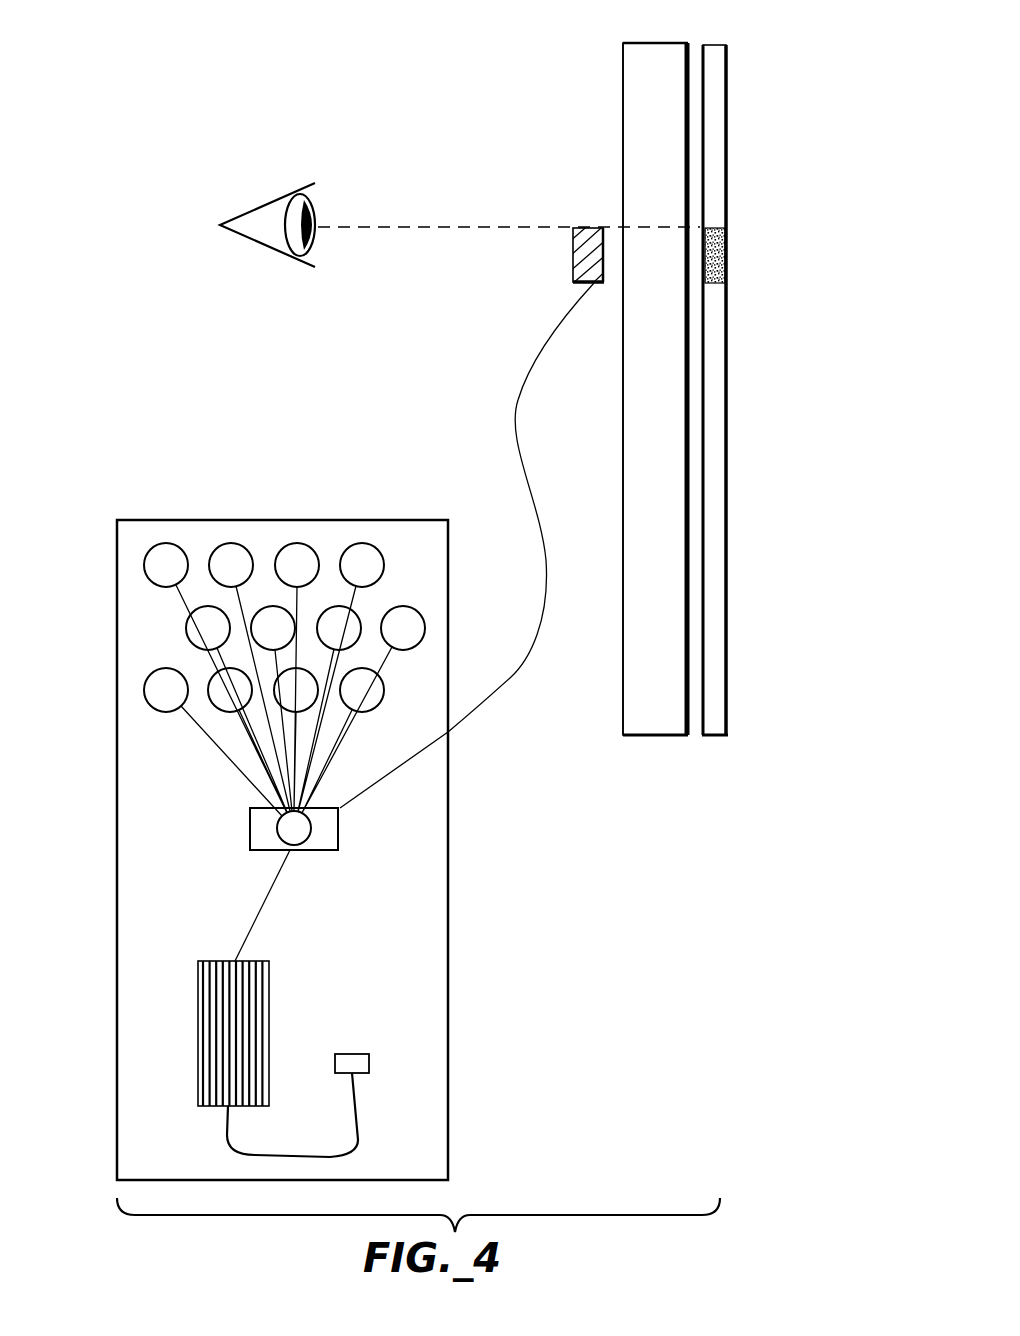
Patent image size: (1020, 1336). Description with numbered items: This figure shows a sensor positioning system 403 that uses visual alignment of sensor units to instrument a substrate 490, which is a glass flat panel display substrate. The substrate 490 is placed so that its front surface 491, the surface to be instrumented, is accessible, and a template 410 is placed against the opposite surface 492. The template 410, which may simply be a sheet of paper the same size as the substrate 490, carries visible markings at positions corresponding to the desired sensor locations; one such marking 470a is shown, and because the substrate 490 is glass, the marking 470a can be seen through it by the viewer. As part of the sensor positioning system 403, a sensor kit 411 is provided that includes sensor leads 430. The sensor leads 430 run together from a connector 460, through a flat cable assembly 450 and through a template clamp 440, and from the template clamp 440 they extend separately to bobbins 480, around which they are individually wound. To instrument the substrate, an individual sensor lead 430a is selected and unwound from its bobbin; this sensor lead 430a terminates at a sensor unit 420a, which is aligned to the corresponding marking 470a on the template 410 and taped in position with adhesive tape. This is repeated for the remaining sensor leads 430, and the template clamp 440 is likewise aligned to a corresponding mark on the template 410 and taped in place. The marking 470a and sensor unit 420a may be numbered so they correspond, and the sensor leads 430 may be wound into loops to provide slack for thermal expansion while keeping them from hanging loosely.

The sensor positioning system 403 is at (748, 765).
The template 410 is at (722, 128).
The sensor kit 411 is at (280, 533).
The sensor unit 420a is at (573, 248).
The sensor leads 430 is at (135, 745).
The individual sensor lead 430a is at (517, 668).
The template clamp 440 is at (250, 830).
The flat cable assembly 450 is at (198, 1013).
The connector 460 is at (369, 1065).
The marking 470a is at (727, 253).
The bobbins 480 is at (135, 607).
The substrate 490 is at (636, 96).
The front surface 491 is at (628, 43).
The opposite surface 492 is at (688, 43).